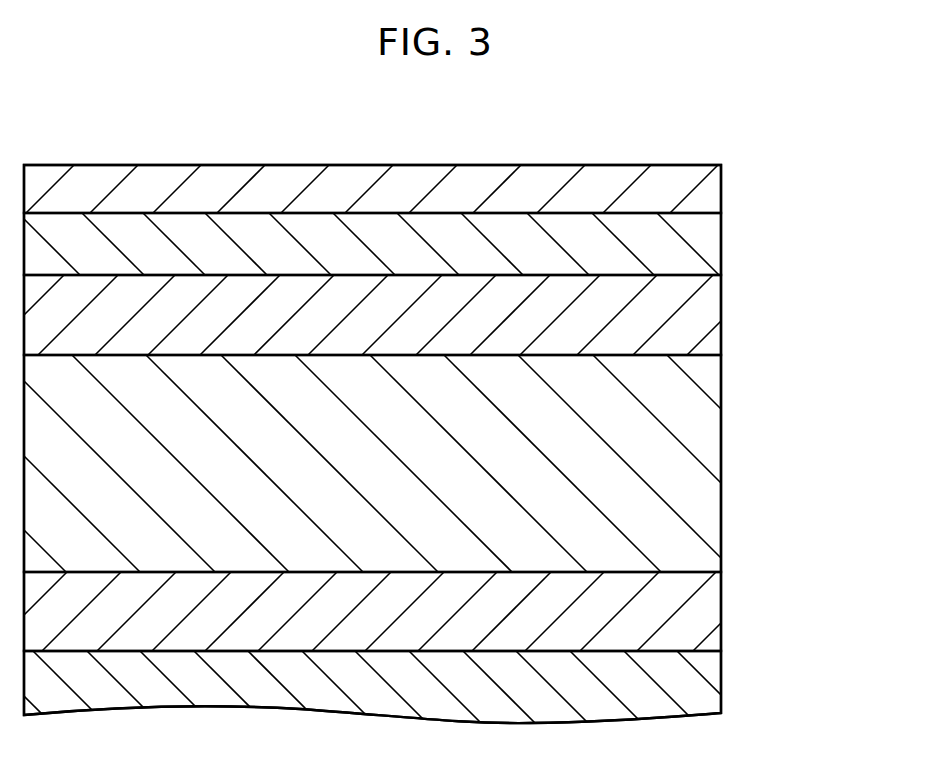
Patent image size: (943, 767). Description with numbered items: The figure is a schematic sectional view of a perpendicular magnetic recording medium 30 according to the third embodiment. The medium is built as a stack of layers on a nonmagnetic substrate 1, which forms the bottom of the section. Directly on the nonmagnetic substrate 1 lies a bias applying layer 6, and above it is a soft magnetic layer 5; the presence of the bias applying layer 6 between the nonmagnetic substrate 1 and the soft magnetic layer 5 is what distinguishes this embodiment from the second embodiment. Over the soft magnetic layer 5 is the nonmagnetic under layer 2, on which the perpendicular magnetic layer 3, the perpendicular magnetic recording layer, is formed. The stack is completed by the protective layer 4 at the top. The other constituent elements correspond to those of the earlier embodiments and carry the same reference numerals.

The perpendicular magnetic recording medium 30 is at (722, 158).
The protective layer 4 is at (710, 190).
The perpendicular magnetic layer 3 is at (710, 237).
The nonmagnetic under layer 2 is at (710, 307).
The soft magnetic layer 5 is at (715, 430).
The bias applying layer 6 is at (717, 605).
The nonmagnetic substrate 1 is at (715, 673).